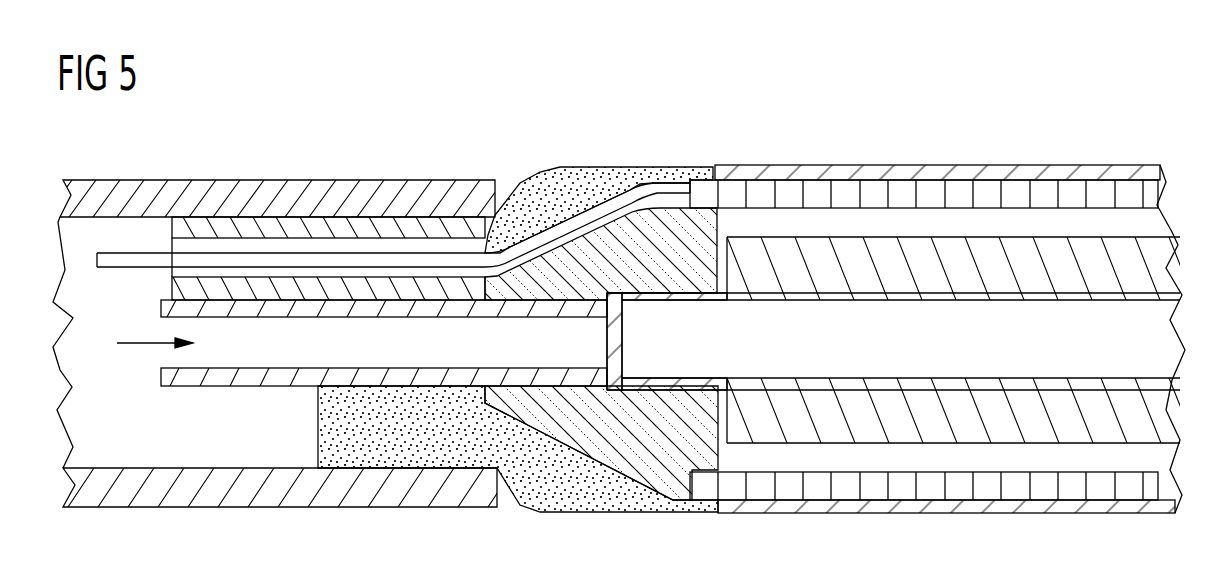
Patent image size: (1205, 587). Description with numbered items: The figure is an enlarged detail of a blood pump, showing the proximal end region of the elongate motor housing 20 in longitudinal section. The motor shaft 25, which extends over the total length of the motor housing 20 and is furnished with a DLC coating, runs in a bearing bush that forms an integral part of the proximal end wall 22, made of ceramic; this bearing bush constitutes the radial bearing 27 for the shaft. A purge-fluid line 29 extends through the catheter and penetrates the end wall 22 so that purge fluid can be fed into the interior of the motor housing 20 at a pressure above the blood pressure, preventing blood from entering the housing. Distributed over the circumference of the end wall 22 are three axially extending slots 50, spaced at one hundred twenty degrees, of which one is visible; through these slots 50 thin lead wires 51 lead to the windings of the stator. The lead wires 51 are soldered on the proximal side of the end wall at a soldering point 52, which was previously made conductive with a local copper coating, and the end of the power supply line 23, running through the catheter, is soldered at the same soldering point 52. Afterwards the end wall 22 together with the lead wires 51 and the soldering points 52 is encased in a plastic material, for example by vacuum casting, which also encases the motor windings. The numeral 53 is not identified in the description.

The motor housing 20 is at (864, 140).
The proximal end wall 22 is at (670, 510).
The electrical cables 23 is at (121, 270).
The motor shaft 25 is at (931, 350).
The radial bearing 27 is at (666, 378).
The purge-fluid line 29 is at (205, 387).
The axially extending slots 50 is at (647, 183).
The lead wires 51 is at (598, 190).
The soldering point 52 is at (540, 217).
The sleeve 53 is at (298, 227).